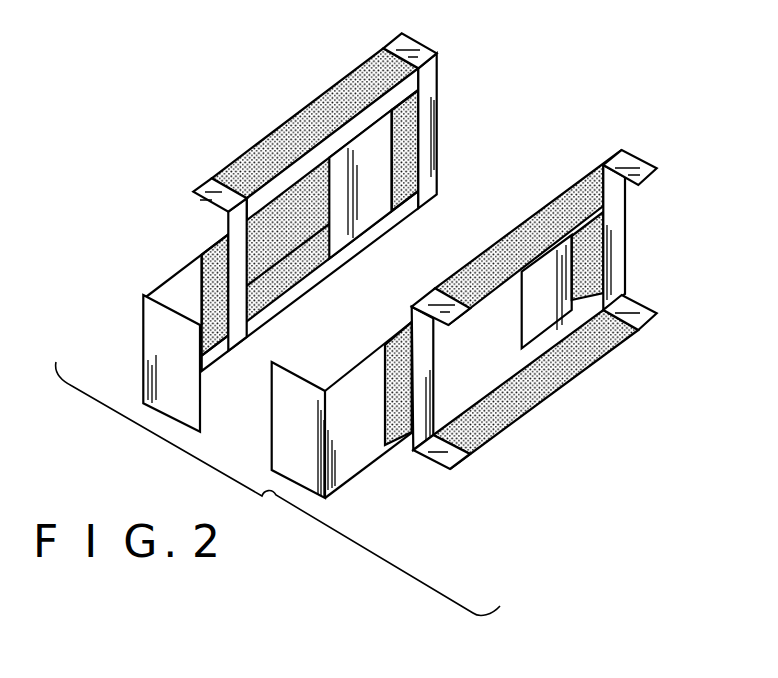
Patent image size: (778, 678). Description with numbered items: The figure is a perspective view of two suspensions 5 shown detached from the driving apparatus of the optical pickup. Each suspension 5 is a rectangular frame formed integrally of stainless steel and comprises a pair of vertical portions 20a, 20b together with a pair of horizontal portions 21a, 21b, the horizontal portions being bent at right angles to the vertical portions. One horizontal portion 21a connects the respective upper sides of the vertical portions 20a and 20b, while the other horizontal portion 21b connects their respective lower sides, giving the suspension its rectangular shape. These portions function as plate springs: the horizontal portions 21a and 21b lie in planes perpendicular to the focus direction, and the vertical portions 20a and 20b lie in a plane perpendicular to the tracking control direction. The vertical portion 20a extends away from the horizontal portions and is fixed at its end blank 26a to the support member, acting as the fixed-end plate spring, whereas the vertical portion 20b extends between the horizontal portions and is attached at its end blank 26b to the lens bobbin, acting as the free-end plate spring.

The suspension 5 is at (350, 52).
The vertical portion 20a is at (212, 242).
The vertical portion 20b is at (416, 128).
The horizontal portion 21a is at (287, 120).
The horizontal portion 21b is at (300, 288).
The end blank 26a is at (174, 285).
The end blank 26b is at (342, 190).